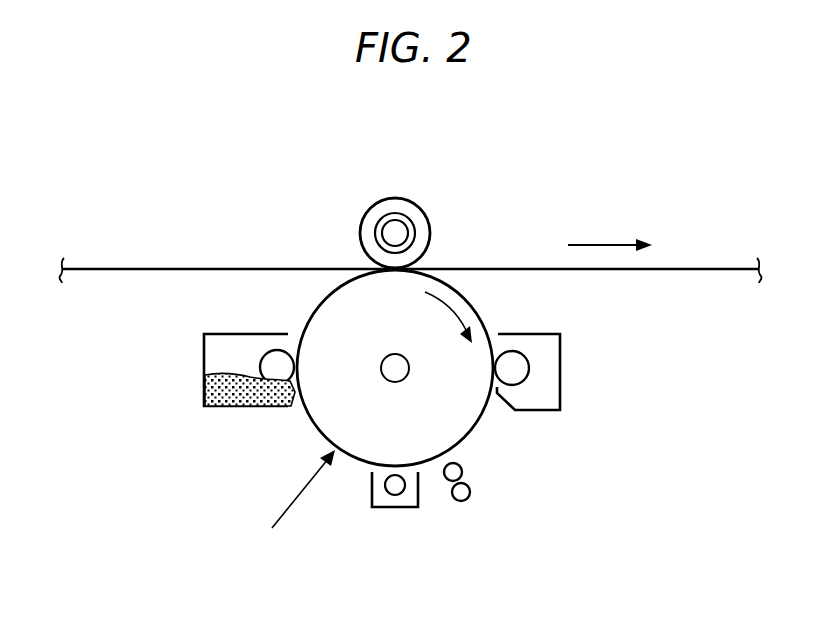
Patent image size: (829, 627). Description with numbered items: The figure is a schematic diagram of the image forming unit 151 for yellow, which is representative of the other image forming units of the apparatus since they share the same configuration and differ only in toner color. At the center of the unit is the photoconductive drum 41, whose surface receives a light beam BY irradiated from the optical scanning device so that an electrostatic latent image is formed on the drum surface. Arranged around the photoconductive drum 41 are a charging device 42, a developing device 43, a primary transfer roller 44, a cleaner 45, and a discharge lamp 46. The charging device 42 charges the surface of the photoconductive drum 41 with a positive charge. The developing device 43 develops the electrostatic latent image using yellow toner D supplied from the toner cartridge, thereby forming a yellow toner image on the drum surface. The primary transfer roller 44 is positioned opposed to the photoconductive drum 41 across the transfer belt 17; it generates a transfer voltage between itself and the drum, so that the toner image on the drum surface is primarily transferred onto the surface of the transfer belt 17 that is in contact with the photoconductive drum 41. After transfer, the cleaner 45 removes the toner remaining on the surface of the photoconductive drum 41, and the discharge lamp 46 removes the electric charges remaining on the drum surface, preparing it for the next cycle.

The image forming unit 151 is at (513, 196).
The transfer belt 17 is at (128, 268).
The photoconductive drum 41 is at (330, 312).
The primary transfer roller 44 is at (396, 198).
The developing device 43 is at (203, 352).
The yellow toner D is at (230, 400).
The cleaner 45 is at (561, 350).
The charging device 42 is at (395, 508).
The discharge lamp 46 is at (470, 503).
The light beam BY is at (295, 500).